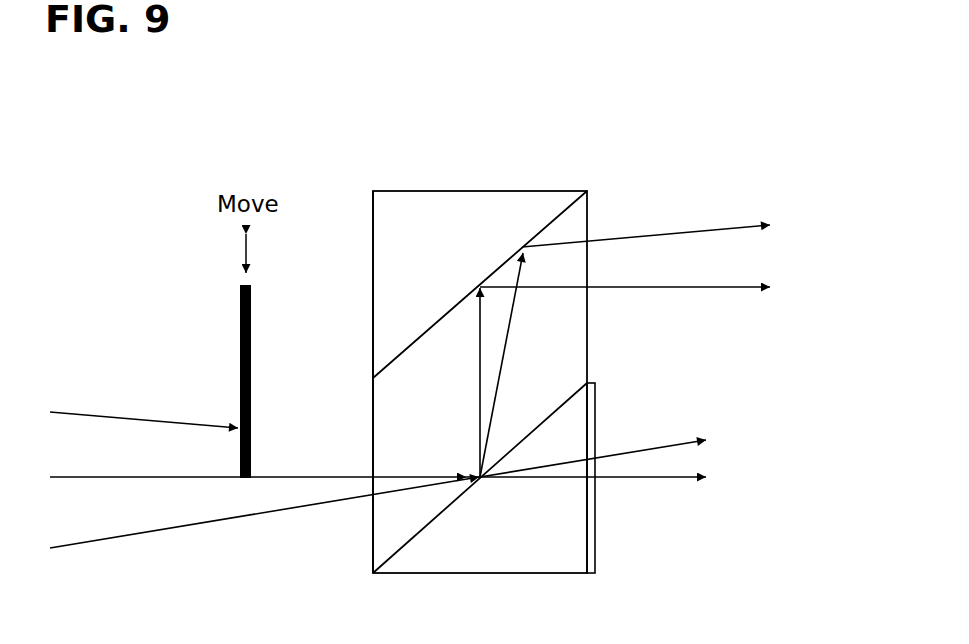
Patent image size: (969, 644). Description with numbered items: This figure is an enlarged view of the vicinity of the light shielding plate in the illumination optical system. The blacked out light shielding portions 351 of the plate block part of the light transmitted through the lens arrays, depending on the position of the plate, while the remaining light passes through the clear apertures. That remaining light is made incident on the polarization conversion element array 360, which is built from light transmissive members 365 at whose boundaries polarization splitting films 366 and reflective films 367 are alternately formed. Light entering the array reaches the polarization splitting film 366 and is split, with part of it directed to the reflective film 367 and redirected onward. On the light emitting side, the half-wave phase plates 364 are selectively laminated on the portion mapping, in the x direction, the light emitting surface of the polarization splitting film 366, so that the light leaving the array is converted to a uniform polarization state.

The light shielding portions 351 is at (240, 331).
The polarization conversion element array 360 is at (531, 191).
The λ/2 phase plates 364 is at (597, 543).
The light transmissive members 365 is at (373, 420).
The polarization splitting films 366 is at (428, 525).
The reflective films 367 is at (497, 265).